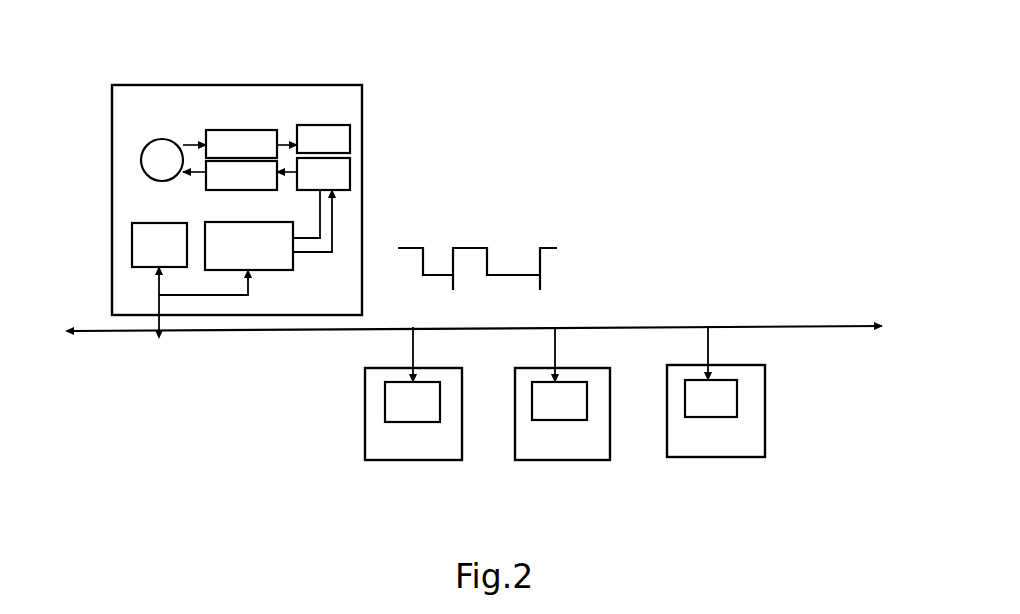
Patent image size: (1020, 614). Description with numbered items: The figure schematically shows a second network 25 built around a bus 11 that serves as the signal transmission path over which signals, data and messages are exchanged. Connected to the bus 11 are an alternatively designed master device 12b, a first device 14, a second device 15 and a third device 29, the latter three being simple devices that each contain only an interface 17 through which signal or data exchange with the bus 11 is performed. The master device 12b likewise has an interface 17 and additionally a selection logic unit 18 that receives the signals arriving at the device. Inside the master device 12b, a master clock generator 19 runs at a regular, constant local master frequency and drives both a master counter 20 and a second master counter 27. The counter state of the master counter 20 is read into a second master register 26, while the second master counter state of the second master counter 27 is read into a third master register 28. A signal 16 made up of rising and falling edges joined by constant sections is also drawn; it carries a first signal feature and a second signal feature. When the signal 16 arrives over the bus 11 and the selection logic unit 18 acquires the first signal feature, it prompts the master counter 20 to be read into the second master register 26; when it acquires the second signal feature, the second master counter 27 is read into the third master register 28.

The bus 11 is at (763, 322).
The master device 12b is at (168, 107).
The first device 14 is at (430, 438).
The second device 15 is at (547, 437).
The signal 16 is at (468, 247).
The interface 17 is at (153, 246).
The selection logic unit 18 is at (262, 247).
The master clock generator 19 is at (160, 146).
The master counter 20 is at (230, 128).
The second network 25 is at (712, 142).
The second master register 26 is at (340, 138).
The second master counter 27 is at (230, 178).
The third master register 28 is at (340, 175).
The third device 29 is at (713, 437).